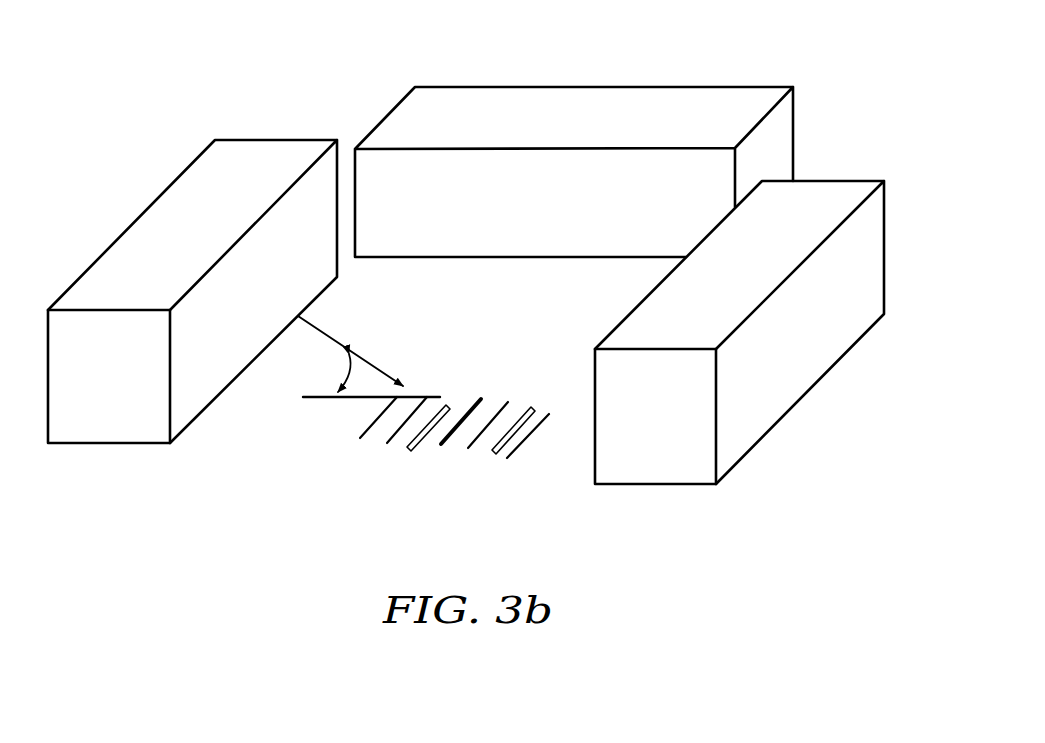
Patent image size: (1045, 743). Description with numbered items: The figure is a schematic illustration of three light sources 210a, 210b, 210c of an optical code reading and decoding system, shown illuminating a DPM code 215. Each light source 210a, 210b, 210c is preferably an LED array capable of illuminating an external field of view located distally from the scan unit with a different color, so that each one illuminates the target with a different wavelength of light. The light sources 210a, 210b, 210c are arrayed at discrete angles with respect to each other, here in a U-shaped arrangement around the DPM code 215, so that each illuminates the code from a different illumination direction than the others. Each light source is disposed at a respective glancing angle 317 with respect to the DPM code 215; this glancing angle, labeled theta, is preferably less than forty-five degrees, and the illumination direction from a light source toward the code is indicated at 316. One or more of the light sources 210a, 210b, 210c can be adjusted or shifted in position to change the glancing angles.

The light source 210a is at (99, 445).
The light source 210b is at (561, 87).
The light source 210c is at (788, 377).
The incident light beam direction 316 is at (309, 349).
The glancing angle 317 is at (348, 397).
The DPM code 215 is at (430, 460).